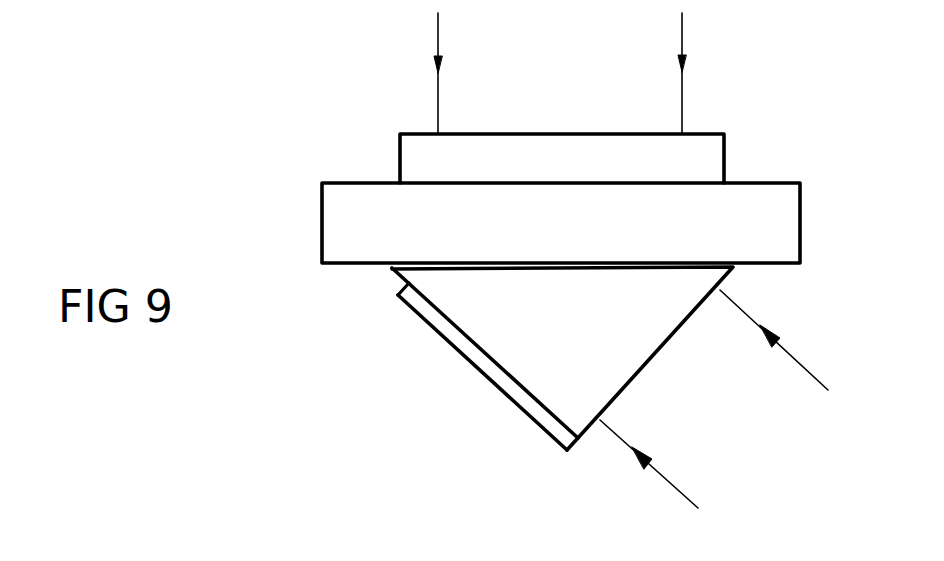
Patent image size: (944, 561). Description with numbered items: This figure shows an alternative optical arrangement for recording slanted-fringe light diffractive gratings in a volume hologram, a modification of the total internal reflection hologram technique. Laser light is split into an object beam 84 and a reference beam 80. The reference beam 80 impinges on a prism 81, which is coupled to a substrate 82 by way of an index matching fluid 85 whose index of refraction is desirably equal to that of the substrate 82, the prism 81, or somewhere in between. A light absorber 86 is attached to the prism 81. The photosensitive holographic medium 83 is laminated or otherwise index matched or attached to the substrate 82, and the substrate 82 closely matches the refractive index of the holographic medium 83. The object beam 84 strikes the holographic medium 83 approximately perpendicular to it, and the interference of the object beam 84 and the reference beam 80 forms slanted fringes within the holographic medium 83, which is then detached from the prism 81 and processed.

The reference beam 80 is at (610, 387).
The prism 81 is at (465, 296).
The substrate 82 is at (342, 220).
The holographic medium 83 is at (417, 152).
The object beam 84 is at (560, 73).
The index matching fluid 85 is at (404, 280).
The light absorber 86 is at (472, 363).